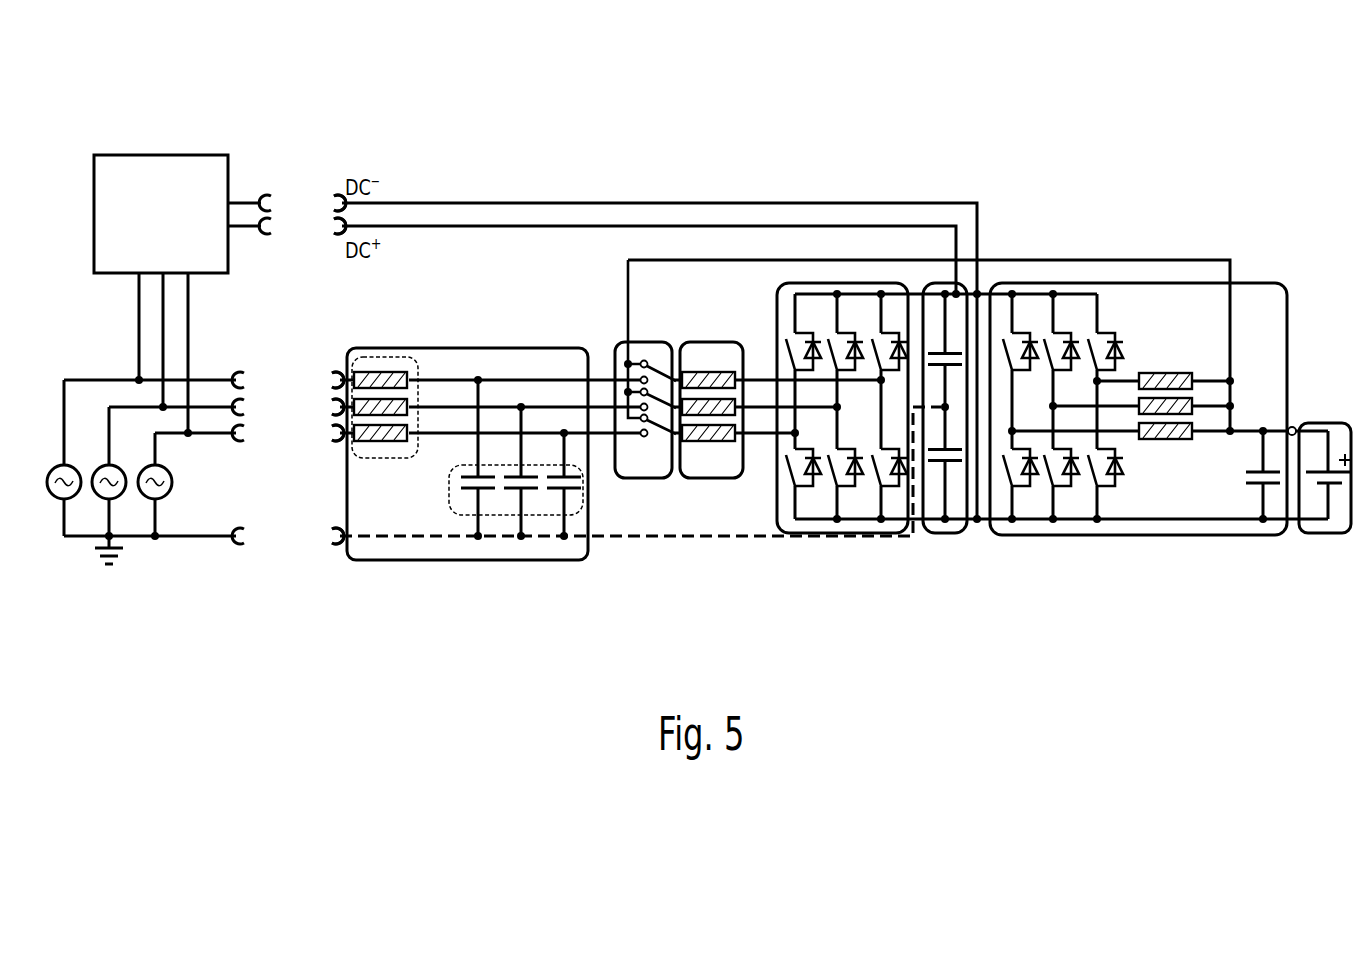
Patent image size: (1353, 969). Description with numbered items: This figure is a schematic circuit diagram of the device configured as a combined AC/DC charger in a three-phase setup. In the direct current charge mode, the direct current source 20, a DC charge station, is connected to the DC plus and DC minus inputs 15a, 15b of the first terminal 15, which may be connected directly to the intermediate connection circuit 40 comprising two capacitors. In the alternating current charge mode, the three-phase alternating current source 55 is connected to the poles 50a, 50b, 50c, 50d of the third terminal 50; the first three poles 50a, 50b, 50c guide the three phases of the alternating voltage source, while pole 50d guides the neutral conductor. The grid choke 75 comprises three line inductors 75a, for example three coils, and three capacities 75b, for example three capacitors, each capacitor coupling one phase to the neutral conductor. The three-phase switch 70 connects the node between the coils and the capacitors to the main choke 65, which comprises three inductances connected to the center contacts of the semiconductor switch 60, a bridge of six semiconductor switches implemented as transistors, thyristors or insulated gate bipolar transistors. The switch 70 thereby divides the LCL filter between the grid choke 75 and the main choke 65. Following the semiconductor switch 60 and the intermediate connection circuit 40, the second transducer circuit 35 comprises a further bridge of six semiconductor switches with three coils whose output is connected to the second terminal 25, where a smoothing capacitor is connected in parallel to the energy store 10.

The energy store 10 is at (1326, 533).
The first terminal 15 is at (252, 150).
The DC plus input 15a is at (577, 205).
The DC minus input 15b is at (587, 296).
The direct current source 20 is at (182, 254).
The second terminal 25 is at (1308, 377).
The second transducer circuit 35 is at (1159, 463).
The intermediate connection circuit 40 is at (952, 463).
The third terminal 50 is at (395, 638).
The pole of the third terminal 50a is at (279, 505).
The pole of the third terminal 50b is at (302, 519).
The pole of the third terminal 50c is at (326, 532).
The pole of the third terminal 50d is at (362, 583).
The alternating current source 55 is at (145, 505).
The semiconductor switch 60 is at (1052, 463).
The main choke 65 is at (777, 492).
The three-phase switch 70 is at (922, 451).
The grid choke 75 is at (640, 495).
The line inductors 75a is at (409, 500).
The capacities 75b is at (516, 509).